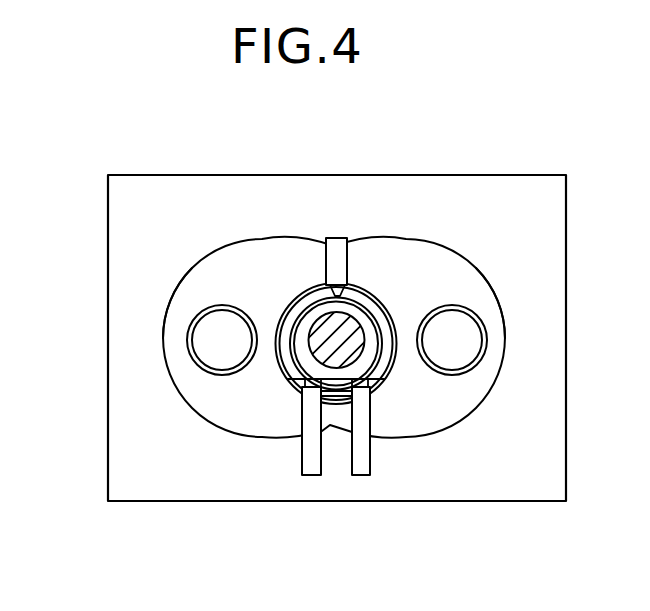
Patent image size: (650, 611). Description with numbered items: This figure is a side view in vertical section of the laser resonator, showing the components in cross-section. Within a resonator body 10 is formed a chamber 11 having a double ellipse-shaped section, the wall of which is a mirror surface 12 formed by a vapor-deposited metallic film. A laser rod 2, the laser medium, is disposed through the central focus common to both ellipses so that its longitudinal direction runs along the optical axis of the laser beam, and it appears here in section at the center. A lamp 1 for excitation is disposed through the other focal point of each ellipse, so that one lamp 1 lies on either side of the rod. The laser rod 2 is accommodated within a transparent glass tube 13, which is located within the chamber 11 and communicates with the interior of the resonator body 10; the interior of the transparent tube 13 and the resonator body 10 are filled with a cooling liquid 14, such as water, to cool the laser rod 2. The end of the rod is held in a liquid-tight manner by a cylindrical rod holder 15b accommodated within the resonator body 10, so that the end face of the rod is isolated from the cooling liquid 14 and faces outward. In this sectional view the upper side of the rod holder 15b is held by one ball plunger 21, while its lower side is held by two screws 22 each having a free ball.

The lamp 1 is at (203, 343).
The laser rod 2 is at (314, 353).
The resonator body 10 is at (157, 197).
The chamber 11 is at (242, 276).
The mirror surface 12 is at (197, 270).
The transparent glass tube 13 is at (373, 300).
The cooling liquid 14 is at (302, 300).
The rod holder 15b is at (368, 356).
The ball plunger 21 is at (338, 250).
The screws 22 is at (358, 475).